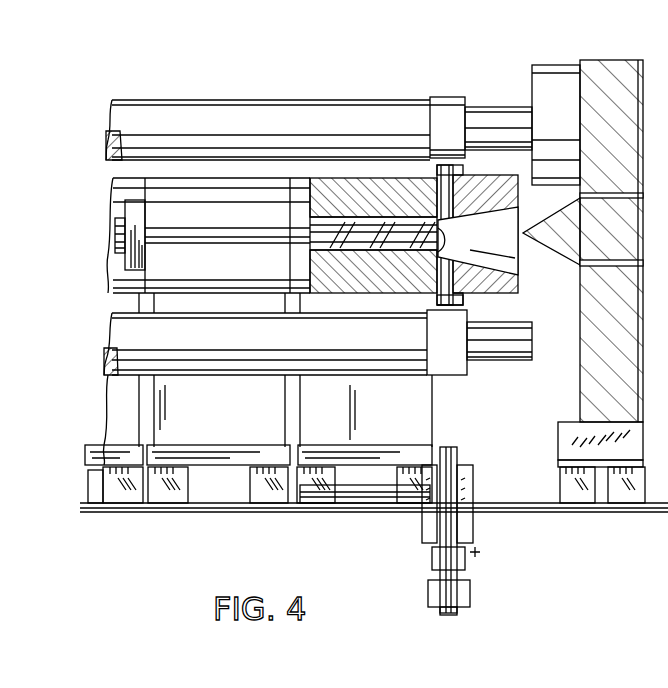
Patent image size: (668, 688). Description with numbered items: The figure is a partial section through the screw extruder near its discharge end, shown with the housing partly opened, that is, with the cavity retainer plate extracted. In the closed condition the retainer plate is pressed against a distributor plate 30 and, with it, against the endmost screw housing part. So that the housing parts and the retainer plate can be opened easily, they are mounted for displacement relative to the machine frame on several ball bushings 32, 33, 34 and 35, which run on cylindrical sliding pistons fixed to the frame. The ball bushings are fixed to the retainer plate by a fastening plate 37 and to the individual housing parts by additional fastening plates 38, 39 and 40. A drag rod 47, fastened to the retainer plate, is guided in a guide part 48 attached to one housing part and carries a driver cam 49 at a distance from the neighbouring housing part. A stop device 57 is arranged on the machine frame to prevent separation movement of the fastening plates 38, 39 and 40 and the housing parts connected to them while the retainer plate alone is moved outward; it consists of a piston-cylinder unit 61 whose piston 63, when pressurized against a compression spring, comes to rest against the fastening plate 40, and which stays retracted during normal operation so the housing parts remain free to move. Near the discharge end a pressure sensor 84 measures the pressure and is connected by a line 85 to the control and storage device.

The distributor plate 30 is at (510, 195).
The ball bushing 32 is at (115, 480).
The ball bushing 33 is at (265, 480).
The ball bushing 34 is at (410, 480).
The ball bushing 35 is at (625, 480).
The fastening plate 37 is at (575, 428).
The fastening plate 38 is at (110, 420).
The fastening plate 39 is at (163, 397).
The fastening plate 40 is at (440, 372).
The drag rod 47 is at (208, 235).
The guide part 48 is at (130, 210).
The driver cam 49 is at (122, 245).
The stop device 57 is at (484, 523).
The piston-cylinder unit 61 is at (437, 555).
The piston 63 is at (450, 455).
The pressure sensor 84 is at (440, 195).
The line 85 is at (460, 278).